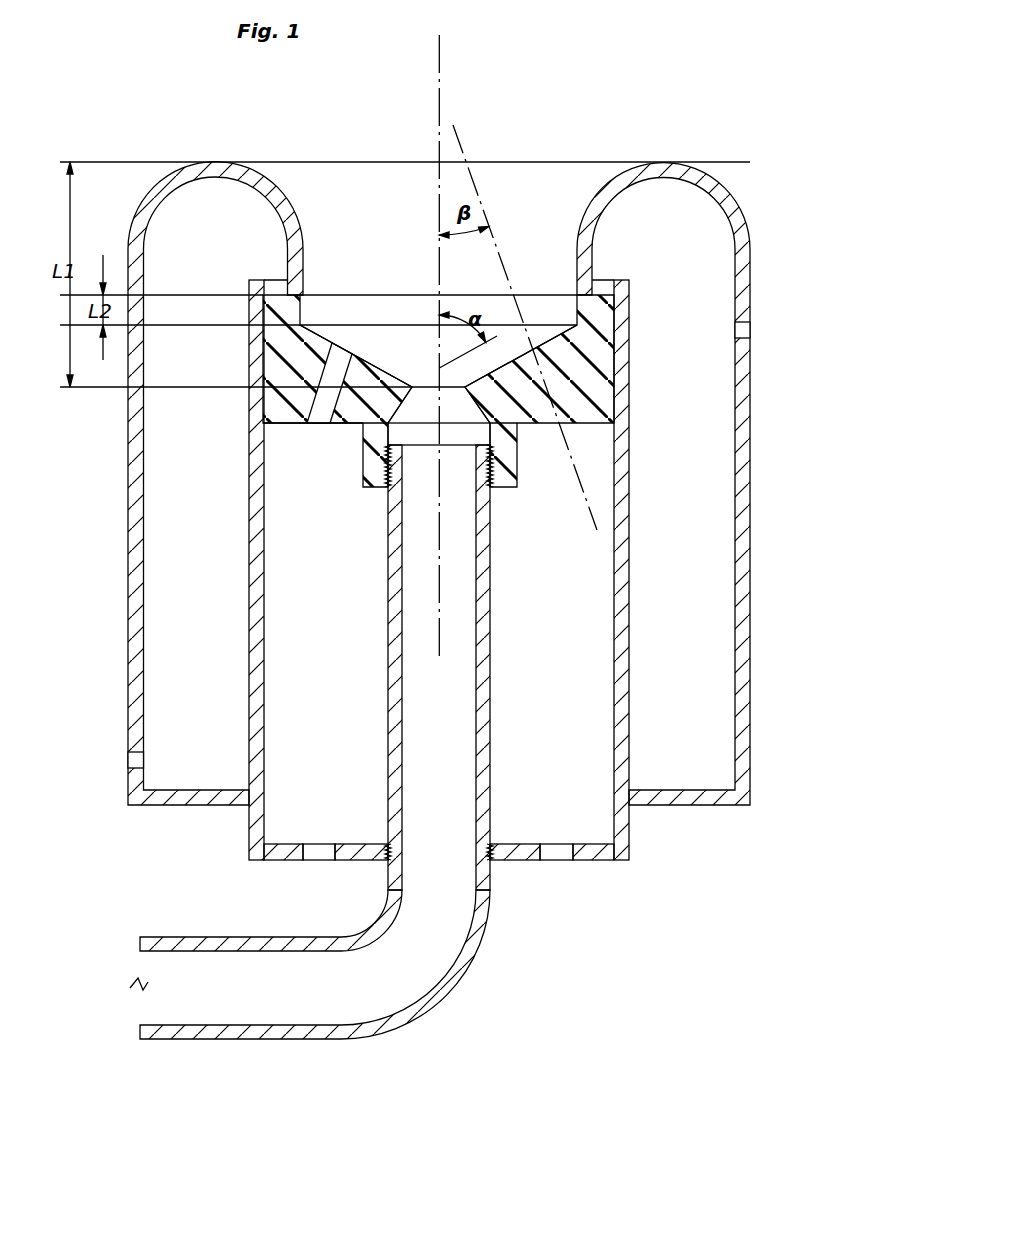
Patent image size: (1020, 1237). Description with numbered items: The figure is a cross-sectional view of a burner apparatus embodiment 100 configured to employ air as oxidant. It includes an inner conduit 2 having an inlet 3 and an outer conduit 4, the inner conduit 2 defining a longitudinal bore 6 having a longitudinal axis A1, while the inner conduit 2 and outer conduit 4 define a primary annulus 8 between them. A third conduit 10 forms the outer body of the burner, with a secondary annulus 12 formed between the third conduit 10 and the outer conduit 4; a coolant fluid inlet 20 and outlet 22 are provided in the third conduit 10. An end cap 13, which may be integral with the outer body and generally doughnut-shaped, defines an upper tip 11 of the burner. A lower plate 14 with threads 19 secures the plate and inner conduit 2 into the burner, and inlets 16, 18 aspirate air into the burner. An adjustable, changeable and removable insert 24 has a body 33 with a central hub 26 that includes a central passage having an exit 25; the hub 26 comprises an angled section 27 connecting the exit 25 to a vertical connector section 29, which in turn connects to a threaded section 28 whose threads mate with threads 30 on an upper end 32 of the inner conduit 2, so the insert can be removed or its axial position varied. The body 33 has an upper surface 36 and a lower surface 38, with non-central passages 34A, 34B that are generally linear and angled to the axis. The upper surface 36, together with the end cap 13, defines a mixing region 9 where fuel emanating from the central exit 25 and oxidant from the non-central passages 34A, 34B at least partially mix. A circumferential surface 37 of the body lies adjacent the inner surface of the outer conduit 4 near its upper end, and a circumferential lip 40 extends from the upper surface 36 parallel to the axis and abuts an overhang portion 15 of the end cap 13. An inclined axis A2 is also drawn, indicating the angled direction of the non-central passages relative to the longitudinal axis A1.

The burner apparatus embodiment 100 is at (632, 107).
The inner conduit 2 is at (388, 640).
The inlet 3 is at (175, 1000).
The outer conduit 4 is at (630, 583).
The longitudinal bore 6 is at (449, 713).
The primary annulus 8 is at (331, 733).
The mixing region 9 is at (478, 279).
The third conduit 10 is at (752, 560).
The upper tip 11 is at (213, 162).
The secondary annulus 12 is at (206, 661).
The end cap 13 is at (278, 187).
The lower plate 14 is at (275, 862).
The overhang portion 15 is at (305, 268).
The inlet 16 is at (320, 857).
The inlet 18 is at (555, 850).
The threads 19 is at (620, 852).
The coolant fluid inlet 20 is at (128, 760).
The coolant fluid outlet 22 is at (748, 330).
The insert 24 is at (362, 451).
The exit 25 is at (455, 392).
The central hub 26 is at (363, 472).
The angled section 27 is at (470, 390).
The threaded section 28 is at (396, 480).
The vertical connector section 29 is at (492, 436).
The threads 30 is at (490, 462).
The upper end 32 is at (402, 462).
The body 33 is at (592, 340).
The non-central passage 34A is at (333, 378).
The non-central passage 34B is at (578, 388).
The upper surface 36 is at (334, 343).
The circumferential surface 37 is at (256, 399).
The lower surface 38 is at (283, 425).
The circumferential lip 40 is at (285, 292).
The longitudinal axis A1 is at (447, 597).
The inclined axis A2 is at (577, 472).